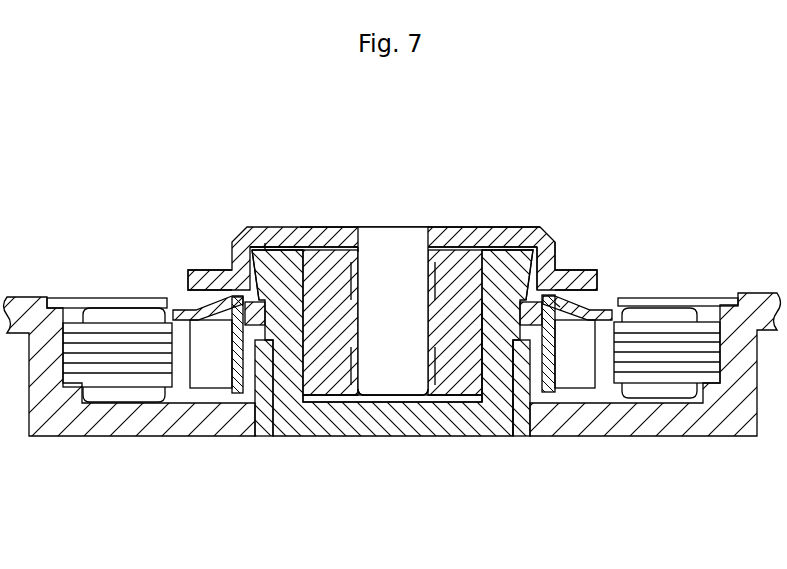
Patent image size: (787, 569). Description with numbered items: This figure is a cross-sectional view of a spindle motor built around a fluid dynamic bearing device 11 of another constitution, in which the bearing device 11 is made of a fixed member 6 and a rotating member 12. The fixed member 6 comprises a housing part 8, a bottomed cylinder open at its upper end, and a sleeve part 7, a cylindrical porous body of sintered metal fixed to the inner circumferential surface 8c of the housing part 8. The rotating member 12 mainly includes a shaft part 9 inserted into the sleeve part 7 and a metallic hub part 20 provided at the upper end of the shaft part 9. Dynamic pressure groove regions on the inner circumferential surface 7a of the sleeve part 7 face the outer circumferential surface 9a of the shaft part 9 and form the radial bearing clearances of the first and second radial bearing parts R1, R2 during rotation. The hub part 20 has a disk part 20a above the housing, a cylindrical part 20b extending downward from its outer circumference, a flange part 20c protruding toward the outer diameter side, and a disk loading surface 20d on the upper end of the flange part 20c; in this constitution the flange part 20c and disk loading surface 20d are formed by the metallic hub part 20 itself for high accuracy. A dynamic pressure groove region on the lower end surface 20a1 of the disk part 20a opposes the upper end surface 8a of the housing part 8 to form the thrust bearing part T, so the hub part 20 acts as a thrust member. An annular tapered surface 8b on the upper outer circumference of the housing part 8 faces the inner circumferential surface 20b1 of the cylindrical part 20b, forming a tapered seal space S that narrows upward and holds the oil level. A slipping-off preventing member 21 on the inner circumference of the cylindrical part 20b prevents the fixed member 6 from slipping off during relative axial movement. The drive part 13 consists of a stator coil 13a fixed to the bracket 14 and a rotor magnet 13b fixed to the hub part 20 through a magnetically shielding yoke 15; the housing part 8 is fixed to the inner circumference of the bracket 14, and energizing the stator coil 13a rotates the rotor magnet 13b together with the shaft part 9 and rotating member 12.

The fixed member 6 is at (392, 421).
The sleeve part 7 is at (392, 367).
The inner circumferential surface of the sleeve part 7a is at (367, 390).
The housing part 8 is at (376, 349).
The upper end surface of the housing part 8a is at (266, 252).
The tapered surface 8b is at (528, 280).
The inner circumferential surface of the housing part 8c is at (497, 352).
The shaft part 9 is at (363, 335).
The outer circumferential surface of the shaft part 9a is at (420, 390).
The fluid dynamic bearing device 11 is at (437, 220).
The rotating member 12 is at (343, 222).
The drive part 13 is at (391, 421).
The stator coil 13a is at (120, 395).
The rotor magnet 13b is at (200, 380).
The bracket 14 is at (560, 422).
The yoke 15 is at (237, 368).
The hub part 20 is at (414, 222).
The disk part 20a is at (315, 240).
The lower end surface of the disk part 20a1 is at (290, 247).
The cylindrical part 20b is at (235, 250).
The inner circumferential surface of the cylindrical part 20b1 is at (550, 247).
The flange part 20c is at (577, 278).
The disk loading surface 20d is at (568, 266).
The slipping-off preventing member 21 is at (263, 365).
The first radial bearing part R1 is at (372, 244).
The second radial bearing part R2 is at (345, 385).
The thrust bearing part T is at (268, 245).
The seal space S is at (557, 310).